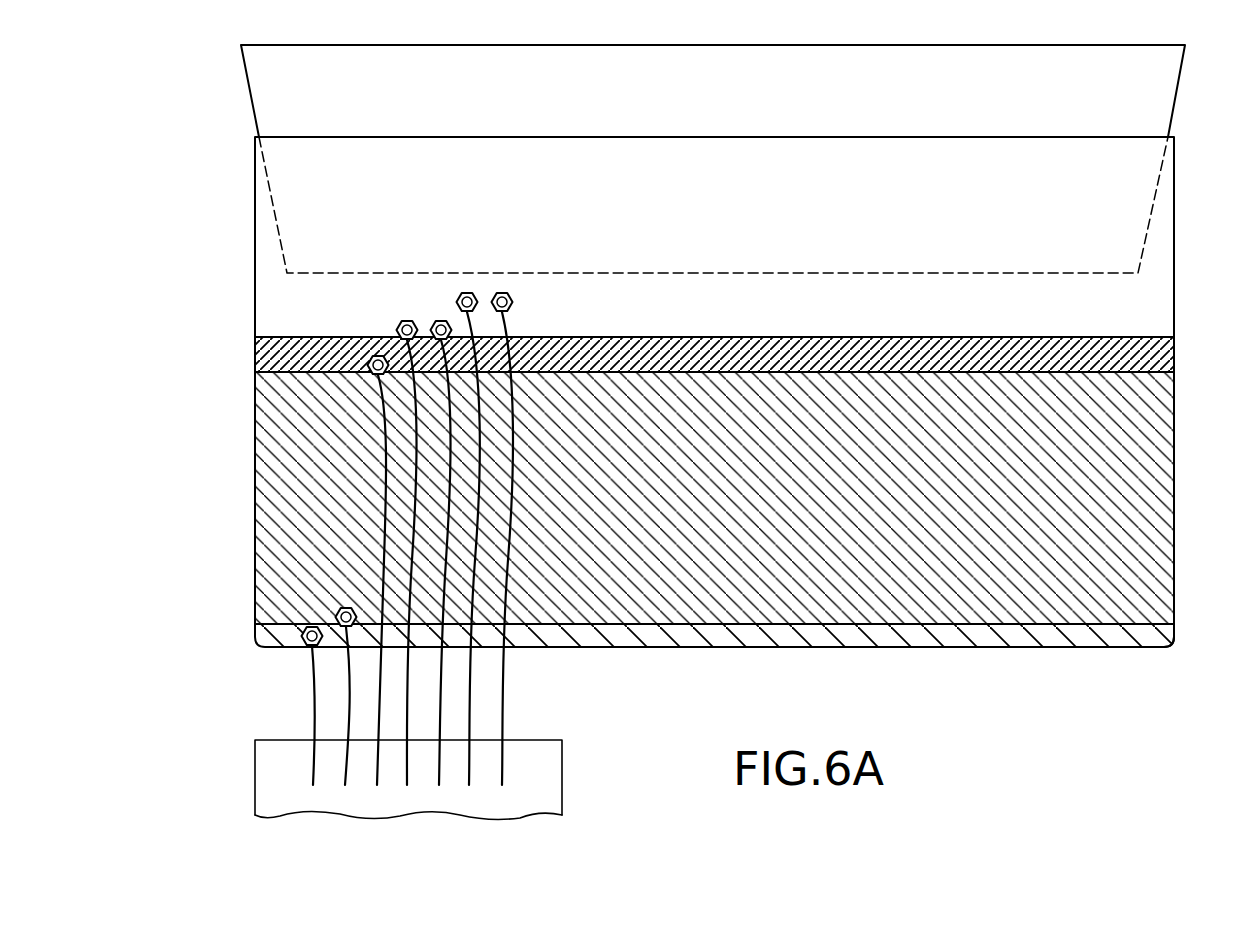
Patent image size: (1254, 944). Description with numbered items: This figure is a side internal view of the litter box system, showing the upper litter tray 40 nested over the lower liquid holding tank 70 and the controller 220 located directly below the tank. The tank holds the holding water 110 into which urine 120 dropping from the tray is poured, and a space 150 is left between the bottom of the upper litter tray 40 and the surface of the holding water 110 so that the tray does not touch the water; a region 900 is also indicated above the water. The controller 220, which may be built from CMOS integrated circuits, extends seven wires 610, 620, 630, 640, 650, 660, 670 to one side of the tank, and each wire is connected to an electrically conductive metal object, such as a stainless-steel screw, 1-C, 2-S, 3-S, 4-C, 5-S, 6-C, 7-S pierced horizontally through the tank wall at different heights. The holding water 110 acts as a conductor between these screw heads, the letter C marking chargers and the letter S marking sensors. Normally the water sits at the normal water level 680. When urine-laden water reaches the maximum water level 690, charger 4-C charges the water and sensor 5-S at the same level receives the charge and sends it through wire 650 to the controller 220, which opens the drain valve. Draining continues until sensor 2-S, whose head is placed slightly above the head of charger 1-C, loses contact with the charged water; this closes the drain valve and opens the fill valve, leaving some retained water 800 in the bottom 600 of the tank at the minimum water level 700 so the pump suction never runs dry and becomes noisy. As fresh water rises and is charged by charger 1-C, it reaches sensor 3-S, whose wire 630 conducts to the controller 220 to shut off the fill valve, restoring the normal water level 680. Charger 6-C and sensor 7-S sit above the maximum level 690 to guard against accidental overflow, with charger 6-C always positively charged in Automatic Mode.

The upper litter tray 40 is at (245, 72).
The lower liquid holding tank 70 is at (254, 185).
The upper region 900 is at (244, 294).
The maximum water level 690 is at (244, 336).
The normal water level 680 is at (244, 370).
The minimum water level 700 is at (244, 621).
The space 150 is at (1158, 301).
The urine 120 is at (1174, 352).
The holding water 110 is at (1174, 480).
The retained water 800 is at (1174, 628).
The bottom of the lower holding tank 600 is at (1137, 648).
The controller 220 is at (255, 762).
The wire 610 is at (313, 784).
The wire 620 is at (345, 784).
The wire 630 is at (377, 784).
The wire 640 is at (407, 784).
The wire 650 is at (439, 784).
The wire 660 is at (469, 784).
The wire 670 is at (502, 784).
The charger 1-C is at (303, 628).
The sensor 2-S is at (338, 612).
The sensor 3-S is at (369, 370).
The charger 4-C is at (398, 326).
The sensor 5-S is at (438, 322).
The charger 6-C is at (467, 292).
The sensor 7-S is at (513, 302).